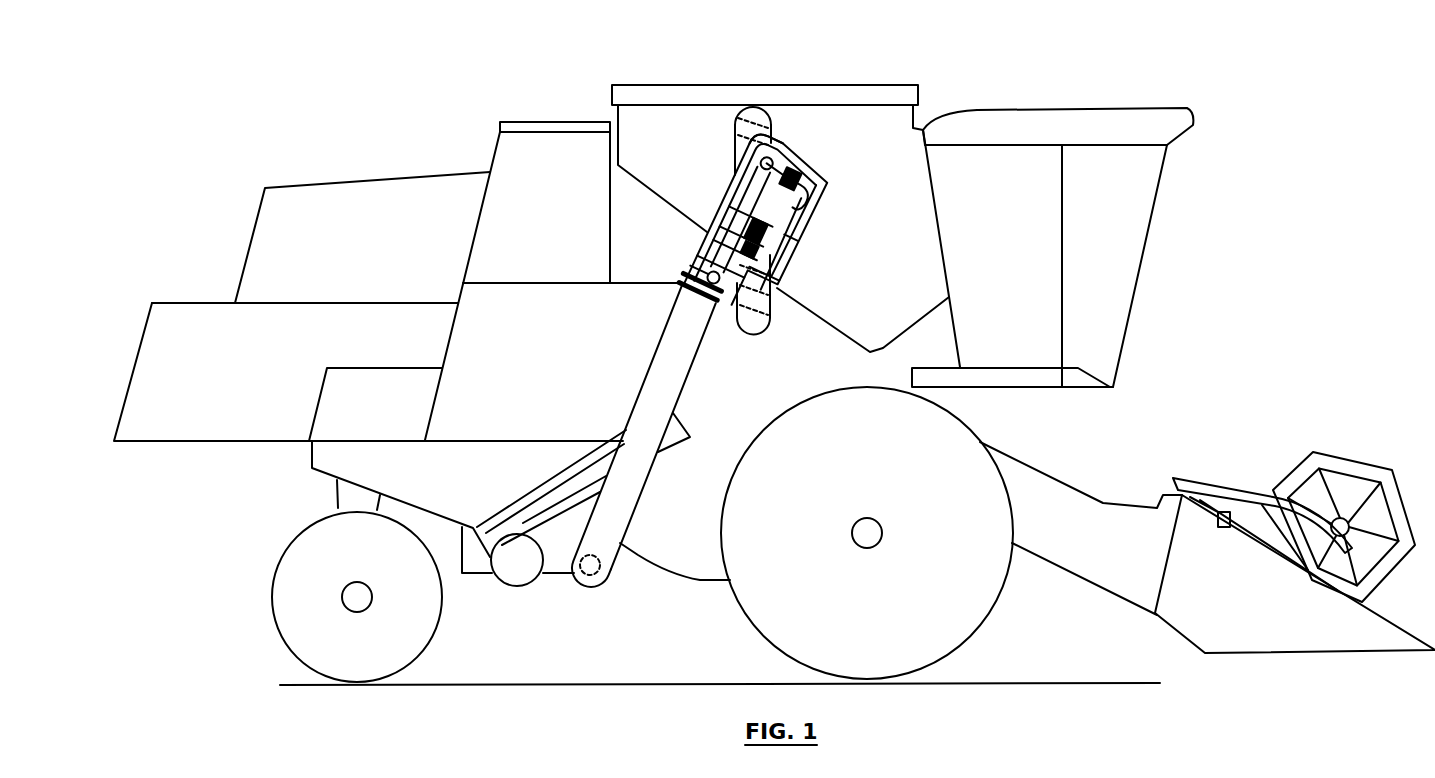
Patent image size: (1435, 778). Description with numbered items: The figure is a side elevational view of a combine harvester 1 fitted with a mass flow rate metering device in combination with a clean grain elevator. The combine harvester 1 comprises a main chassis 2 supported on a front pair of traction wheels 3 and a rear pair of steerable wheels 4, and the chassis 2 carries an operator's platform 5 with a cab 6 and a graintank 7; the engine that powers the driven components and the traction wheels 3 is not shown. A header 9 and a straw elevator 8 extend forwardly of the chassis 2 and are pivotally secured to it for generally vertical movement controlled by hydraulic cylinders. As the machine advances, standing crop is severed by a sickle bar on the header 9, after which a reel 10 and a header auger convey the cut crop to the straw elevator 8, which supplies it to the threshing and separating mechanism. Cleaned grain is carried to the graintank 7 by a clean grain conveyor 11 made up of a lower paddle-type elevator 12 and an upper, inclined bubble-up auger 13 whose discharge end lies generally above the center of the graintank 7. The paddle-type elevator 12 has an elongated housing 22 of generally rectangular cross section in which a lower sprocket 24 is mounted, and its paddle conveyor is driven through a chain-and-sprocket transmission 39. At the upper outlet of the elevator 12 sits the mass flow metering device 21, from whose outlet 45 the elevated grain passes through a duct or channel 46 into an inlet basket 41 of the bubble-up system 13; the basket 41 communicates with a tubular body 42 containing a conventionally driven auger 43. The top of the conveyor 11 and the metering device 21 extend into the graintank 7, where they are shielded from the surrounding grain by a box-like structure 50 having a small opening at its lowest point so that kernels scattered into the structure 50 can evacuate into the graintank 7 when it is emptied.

The combine harvester 1 is at (1146, 70).
The main chassis 2 is at (309, 460).
The front traction wheels 3 is at (956, 628).
The rear steerable wheels 4 is at (416, 630).
The operator's platform 5 is at (1025, 380).
The cab 6 is at (1172, 128).
The graintank 7 is at (624, 122).
The straw elevator 8 is at (1072, 558).
The header 9 is at (1245, 475).
The reel 10 is at (1345, 462).
The clean grain conveyor 11 is at (636, 377).
The paddle-type elevator 12 is at (696, 373).
The bubble-up auger 13 is at (768, 95).
The mass flow metering device 21 is at (833, 183).
The elevator housing 22 is at (703, 246).
The lower sprocket 24 is at (589, 580).
The chain-and-sprocket transmission 39 is at (740, 216).
The inlet basket 41 is at (757, 326).
The tubular body 42 is at (735, 150).
The auger 43 is at (753, 112).
The outlet of the flow metering device 45 is at (817, 190).
The duct or channel 46 is at (781, 252).
The box-like structure 50 is at (792, 172).